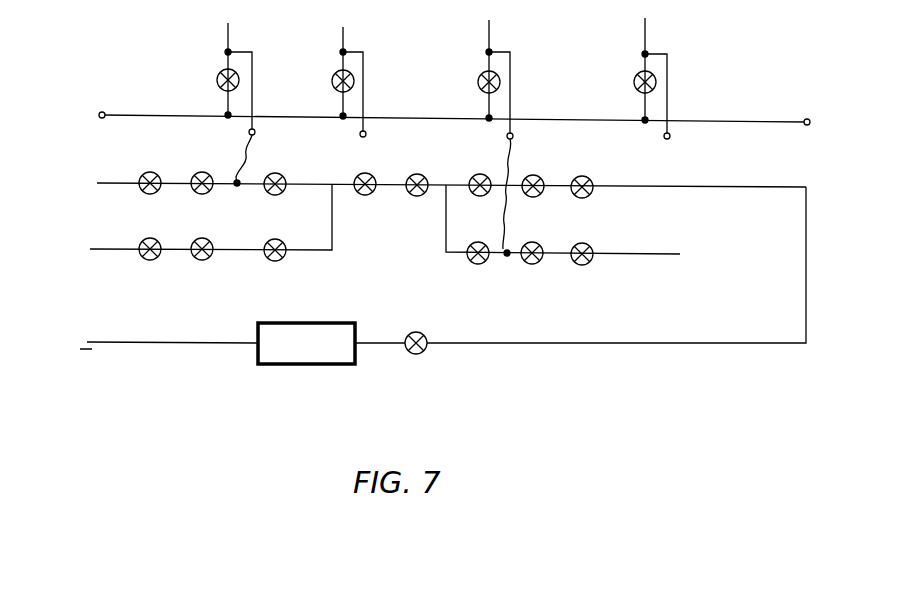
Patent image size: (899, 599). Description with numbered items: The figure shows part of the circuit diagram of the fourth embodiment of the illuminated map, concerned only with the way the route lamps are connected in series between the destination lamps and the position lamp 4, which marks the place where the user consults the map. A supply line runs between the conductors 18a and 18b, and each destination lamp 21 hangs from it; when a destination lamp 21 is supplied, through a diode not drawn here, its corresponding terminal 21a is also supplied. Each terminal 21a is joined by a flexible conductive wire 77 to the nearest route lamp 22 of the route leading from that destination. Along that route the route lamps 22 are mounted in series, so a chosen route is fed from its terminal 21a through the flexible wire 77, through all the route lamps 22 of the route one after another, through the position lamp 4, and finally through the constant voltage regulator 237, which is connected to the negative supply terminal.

The supply conductor terminal 18a is at (98, 113).
The supply conductor terminal 18b is at (811, 123).
The destination lamp 21 is at (216, 84).
The terminal 21a is at (255, 134).
The route lamp 22 is at (157, 191).
The flexible conductive wire 77 is at (240, 163).
The voltage regulator 237 is at (217, 343).
The position lamp 4 is at (410, 356).